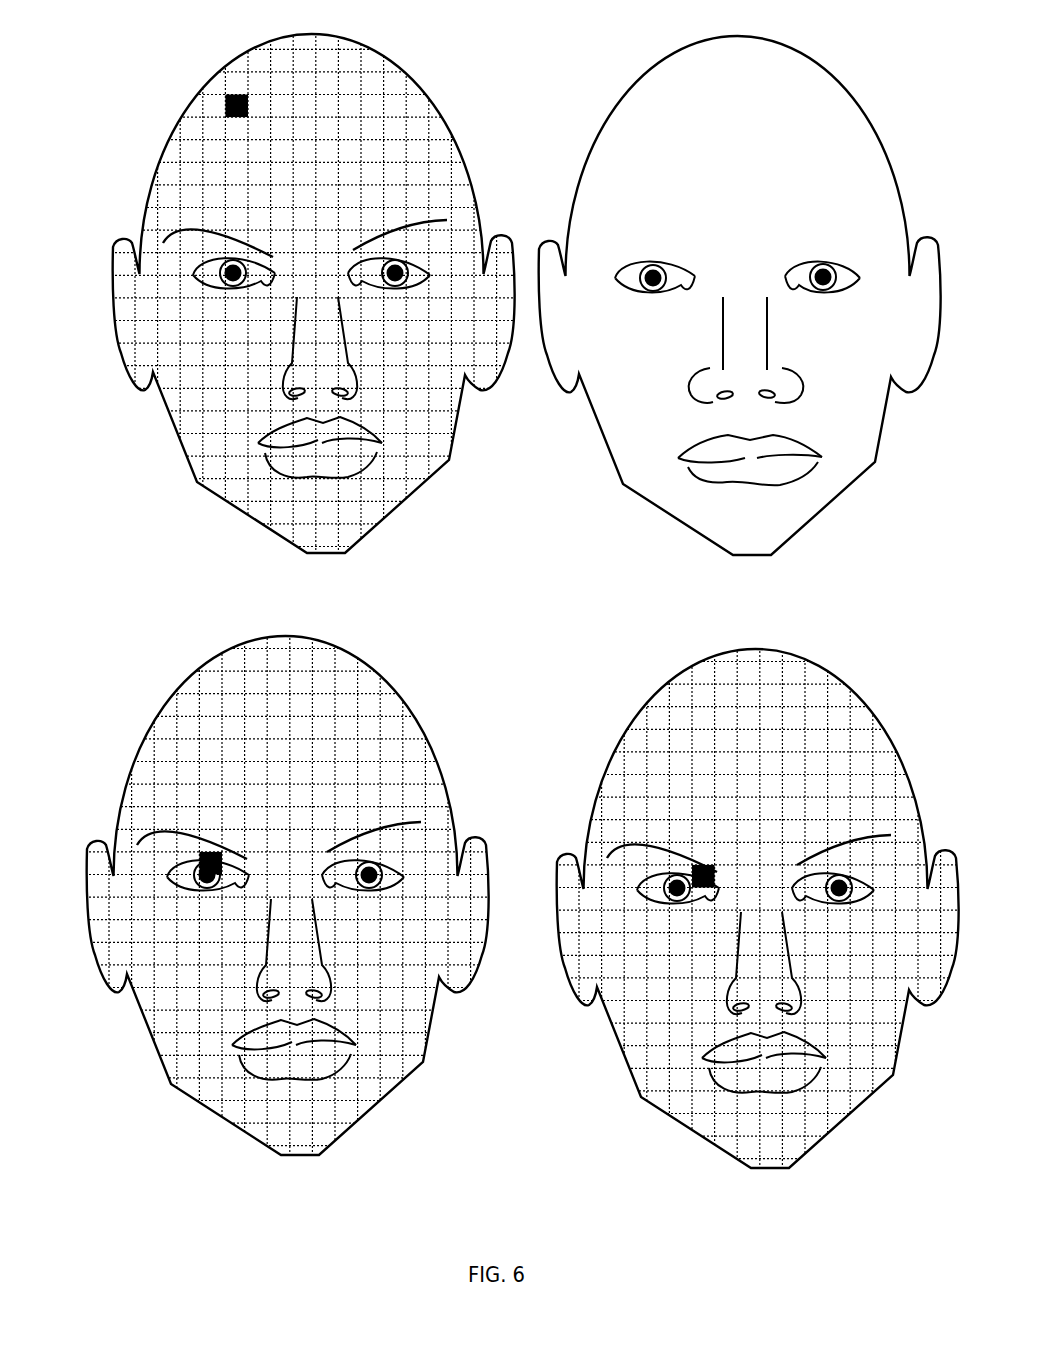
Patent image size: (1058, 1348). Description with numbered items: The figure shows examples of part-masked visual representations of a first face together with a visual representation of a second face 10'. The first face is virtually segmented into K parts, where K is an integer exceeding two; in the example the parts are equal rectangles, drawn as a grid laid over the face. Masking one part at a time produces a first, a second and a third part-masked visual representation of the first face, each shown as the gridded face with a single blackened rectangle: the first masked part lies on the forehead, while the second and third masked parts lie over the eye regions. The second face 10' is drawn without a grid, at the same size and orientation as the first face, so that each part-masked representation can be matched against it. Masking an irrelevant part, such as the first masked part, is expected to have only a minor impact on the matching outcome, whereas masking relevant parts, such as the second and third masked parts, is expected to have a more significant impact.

The second face 10' is at (740, 320).